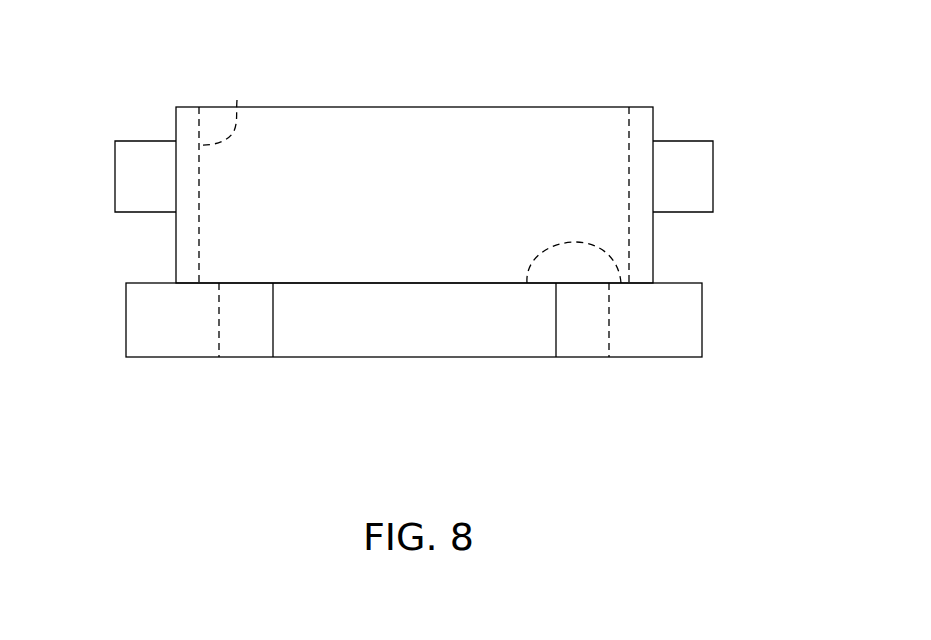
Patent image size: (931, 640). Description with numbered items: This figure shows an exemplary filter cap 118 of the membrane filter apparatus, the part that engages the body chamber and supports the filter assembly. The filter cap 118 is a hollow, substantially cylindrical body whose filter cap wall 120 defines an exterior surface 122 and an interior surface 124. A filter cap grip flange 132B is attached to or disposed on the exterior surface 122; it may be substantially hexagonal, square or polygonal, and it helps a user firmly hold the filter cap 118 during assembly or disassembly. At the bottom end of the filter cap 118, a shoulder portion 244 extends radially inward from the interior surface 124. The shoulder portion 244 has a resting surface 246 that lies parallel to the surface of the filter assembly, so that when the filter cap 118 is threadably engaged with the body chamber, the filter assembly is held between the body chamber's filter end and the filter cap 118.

The filter cap 118 is at (580, 67).
The filter cap wall 120 is at (181, 113).
The exterior surface 122 is at (655, 250).
The interior surface 124 is at (237, 100).
The filter cap grip flange 132B is at (687, 326).
The shoulder portion 244 is at (609, 320).
The resting surface 246 is at (527, 283).